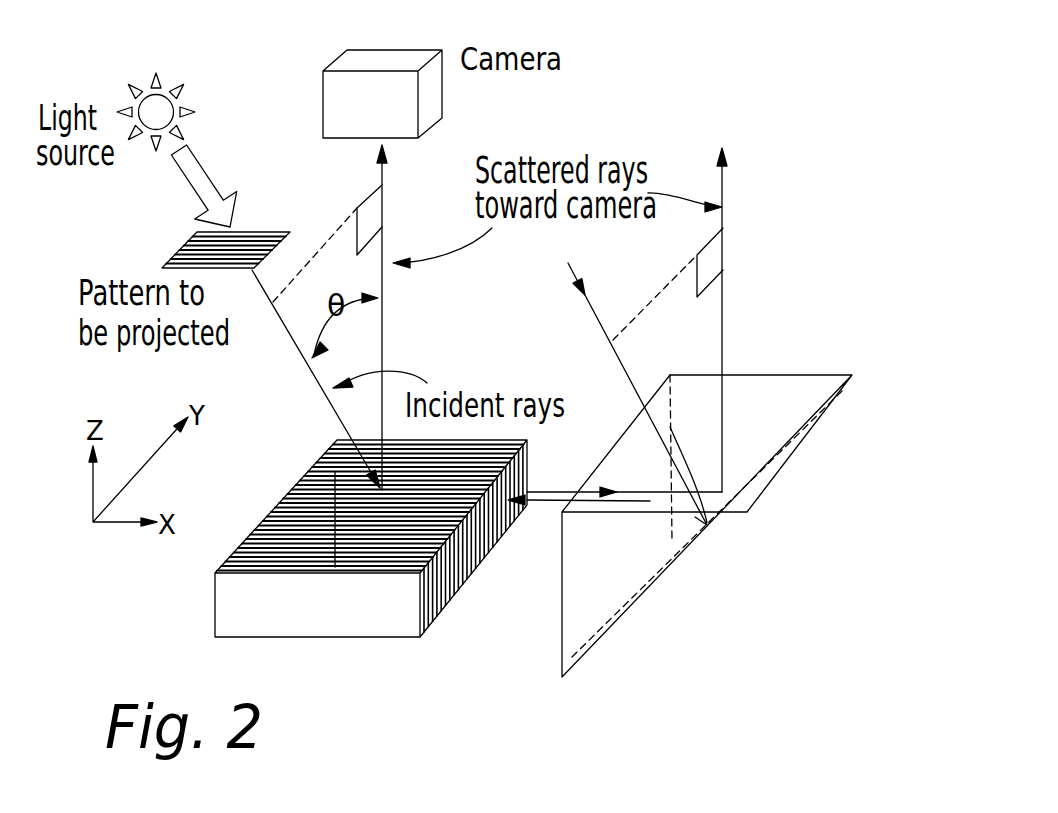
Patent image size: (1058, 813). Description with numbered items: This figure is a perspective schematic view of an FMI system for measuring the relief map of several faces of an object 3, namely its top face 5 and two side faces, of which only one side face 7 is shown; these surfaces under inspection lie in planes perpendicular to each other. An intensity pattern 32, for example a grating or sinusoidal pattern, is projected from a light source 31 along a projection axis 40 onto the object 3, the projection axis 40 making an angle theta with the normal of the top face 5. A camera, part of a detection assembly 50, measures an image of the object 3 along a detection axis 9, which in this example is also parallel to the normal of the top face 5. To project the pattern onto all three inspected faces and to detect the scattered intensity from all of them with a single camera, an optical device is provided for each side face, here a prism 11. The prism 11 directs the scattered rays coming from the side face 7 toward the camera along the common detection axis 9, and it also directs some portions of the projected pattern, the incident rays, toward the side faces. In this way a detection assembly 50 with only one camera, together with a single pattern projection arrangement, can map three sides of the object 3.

The object 3 is at (367, 574).
The top face 5 is at (312, 518).
The side face 7 is at (457, 587).
The detection axis 9 is at (380, 175).
The prism 11 is at (645, 588).
The light source 31 is at (160, 78).
The intensity pattern 32 is at (182, 252).
The projection axis 40 is at (327, 402).
The detection assembly 50 is at (357, 58).